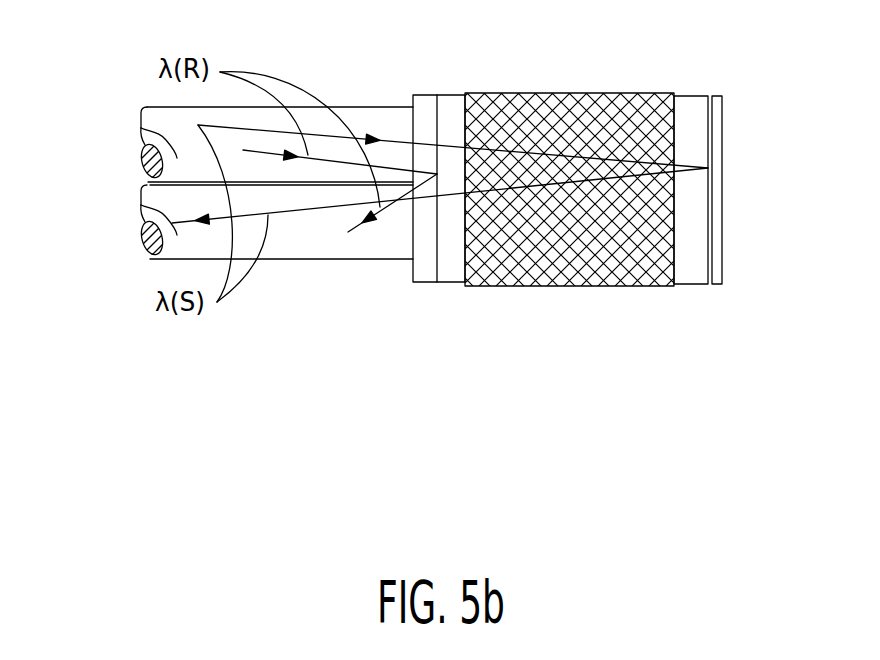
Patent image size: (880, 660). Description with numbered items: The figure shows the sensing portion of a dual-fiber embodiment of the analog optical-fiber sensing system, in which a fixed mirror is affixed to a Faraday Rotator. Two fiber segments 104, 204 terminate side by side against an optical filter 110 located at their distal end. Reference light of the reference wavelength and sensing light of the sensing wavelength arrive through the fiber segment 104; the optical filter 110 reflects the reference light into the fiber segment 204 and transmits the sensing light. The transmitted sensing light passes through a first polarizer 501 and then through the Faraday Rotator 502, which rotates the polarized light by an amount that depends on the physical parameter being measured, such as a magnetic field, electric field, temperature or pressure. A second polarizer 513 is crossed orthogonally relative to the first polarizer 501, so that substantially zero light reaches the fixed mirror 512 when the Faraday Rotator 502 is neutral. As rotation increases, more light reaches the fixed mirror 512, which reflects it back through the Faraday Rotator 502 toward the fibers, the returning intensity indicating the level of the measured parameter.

The fiber segment 104 is at (141, 128).
The fiber segment 204 is at (141, 200).
The optical filter 110 is at (430, 100).
The first polarizer 501 is at (448, 268).
The Faraday Rotator 502 is at (552, 102).
The second polarizer 513 is at (688, 105).
The fixed mirror 512 is at (723, 267).